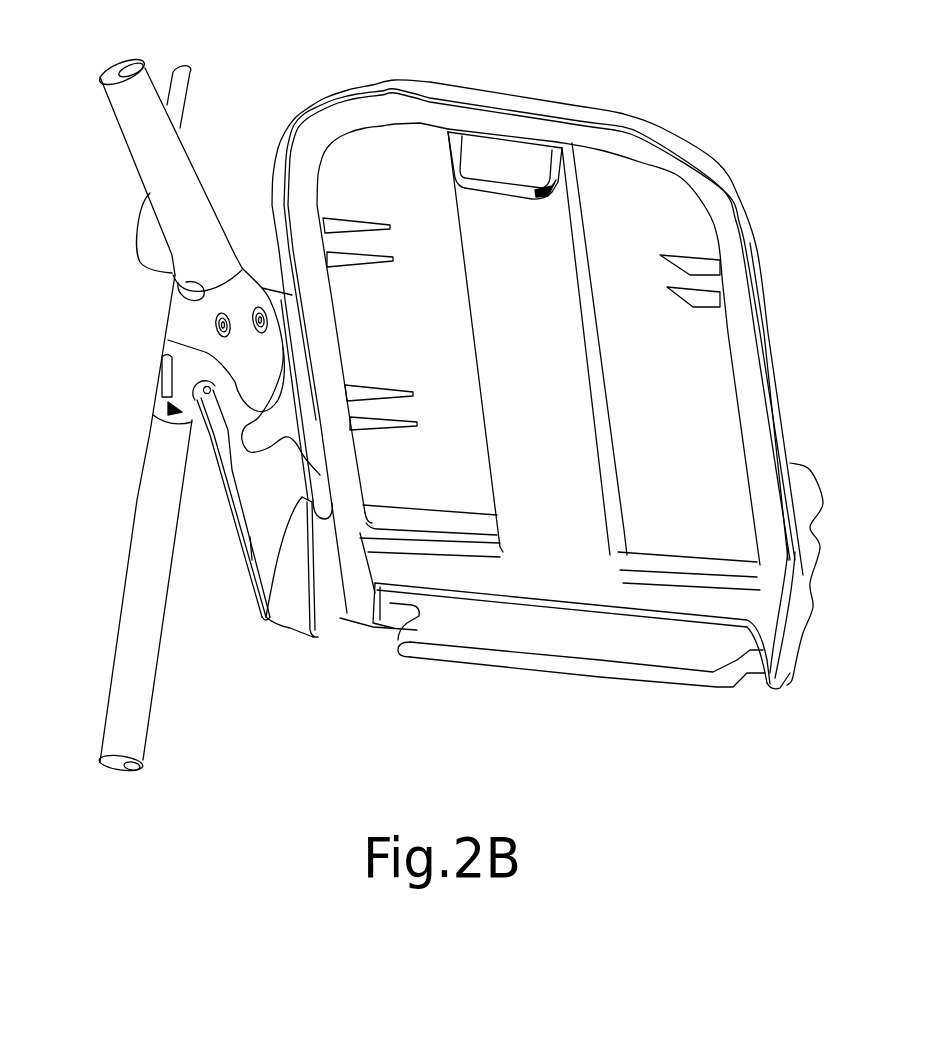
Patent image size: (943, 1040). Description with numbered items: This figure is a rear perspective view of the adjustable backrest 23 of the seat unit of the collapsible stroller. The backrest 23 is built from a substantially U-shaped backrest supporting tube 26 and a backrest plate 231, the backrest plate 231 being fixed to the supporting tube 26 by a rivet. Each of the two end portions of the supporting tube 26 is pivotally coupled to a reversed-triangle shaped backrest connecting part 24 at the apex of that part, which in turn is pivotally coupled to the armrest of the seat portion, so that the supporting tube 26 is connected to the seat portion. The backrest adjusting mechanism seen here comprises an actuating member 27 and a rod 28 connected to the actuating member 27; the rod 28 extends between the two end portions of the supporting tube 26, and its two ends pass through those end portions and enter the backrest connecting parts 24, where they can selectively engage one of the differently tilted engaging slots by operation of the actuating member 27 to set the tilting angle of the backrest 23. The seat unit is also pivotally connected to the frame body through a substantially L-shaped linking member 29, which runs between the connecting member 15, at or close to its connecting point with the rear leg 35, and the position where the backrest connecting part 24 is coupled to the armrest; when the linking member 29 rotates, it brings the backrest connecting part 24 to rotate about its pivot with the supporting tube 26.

The connecting member 15 is at (162, 400).
The adjustable backrest 23 is at (553, 110).
The backrest plate 231 is at (445, 475).
The backrest connecting part 24 is at (290, 605).
The backrest supporting tube 26 is at (747, 372).
The actuating member 27 is at (493, 175).
The rod 28 is at (710, 580).
The linking member 29 is at (250, 576).
The rear leg 35 is at (128, 608).